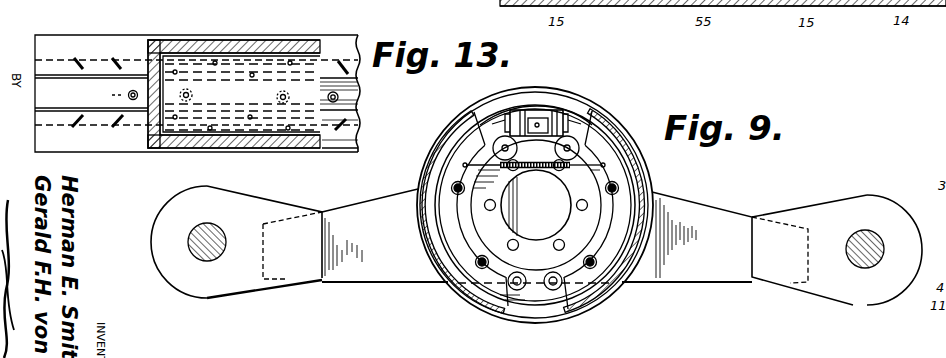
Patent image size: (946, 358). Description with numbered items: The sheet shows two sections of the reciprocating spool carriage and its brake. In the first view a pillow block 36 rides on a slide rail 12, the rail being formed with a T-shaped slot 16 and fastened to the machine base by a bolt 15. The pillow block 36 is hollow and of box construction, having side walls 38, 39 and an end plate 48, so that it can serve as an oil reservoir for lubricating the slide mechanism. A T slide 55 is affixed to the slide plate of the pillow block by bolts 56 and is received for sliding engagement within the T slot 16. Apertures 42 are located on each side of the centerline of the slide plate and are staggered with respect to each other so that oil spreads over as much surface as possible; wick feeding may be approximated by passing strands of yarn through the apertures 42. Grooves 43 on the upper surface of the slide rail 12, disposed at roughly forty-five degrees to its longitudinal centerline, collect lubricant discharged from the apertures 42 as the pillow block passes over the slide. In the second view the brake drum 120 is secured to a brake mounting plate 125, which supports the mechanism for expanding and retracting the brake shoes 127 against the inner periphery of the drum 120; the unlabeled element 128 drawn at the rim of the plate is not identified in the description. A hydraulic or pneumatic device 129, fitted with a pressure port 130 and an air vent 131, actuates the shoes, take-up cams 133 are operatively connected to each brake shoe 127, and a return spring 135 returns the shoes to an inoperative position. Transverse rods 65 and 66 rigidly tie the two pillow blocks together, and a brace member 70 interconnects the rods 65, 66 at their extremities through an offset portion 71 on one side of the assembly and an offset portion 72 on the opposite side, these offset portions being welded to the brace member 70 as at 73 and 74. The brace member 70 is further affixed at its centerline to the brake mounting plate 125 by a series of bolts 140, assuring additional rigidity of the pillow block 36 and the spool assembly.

In FIG. 13, the slide rail 12 is at (343, 149).
In FIG. 13, the bolt 15 is at (345, 97).
In FIG. 13, the T-shaped slot 16 is at (36, 63).
In FIG. 13, the pillow block 36 is at (186, 37).
In FIG. 13, the side wall 38 is at (176, 148).
In FIG. 13, the side wall 39 is at (213, 46).
In FIG. 13, the aperture 42 is at (252, 74).
In FIG. 13, the groove 43 is at (120, 62).
In FIG. 13, the end plate 48 is at (149, 116).
In FIG. 13, the T slide 55 is at (272, 109).
In FIG. 13, the bolt 56 is at (191, 95).
In FIG. 9, the transverse rod 65 is at (208, 223).
In FIG. 9, the transverse rod 66 is at (870, 232).
In FIG. 9, the brace member 70 is at (677, 280).
In FIG. 9, the offset portion 71 is at (216, 296).
In FIG. 9, the offset portion 72 is at (863, 304).
In FIG. 9, the weld 73 is at (286, 222).
In FIG. 9, the weld 74 is at (774, 226).
In FIG. 9, the brake drum 120 is at (609, 130).
In FIG. 9, the brake mounting plate 125 is at (514, 257).
In FIG. 9, the brake shoe 127 is at (466, 229).
In FIG. 9, the backing plate 128 is at (640, 163).
In FIG. 9, the hydraulic or pneumatic device 129 is at (517, 150).
In FIG. 9, the pressure port 130 is at (537, 116).
In FIG. 9, the air vent 131 is at (545, 112).
In FIG. 9, the take-up cam 133 is at (578, 148).
In FIG. 9, the return spring 135 is at (521, 172).
In FIG. 9, the bolt 140 is at (563, 245).